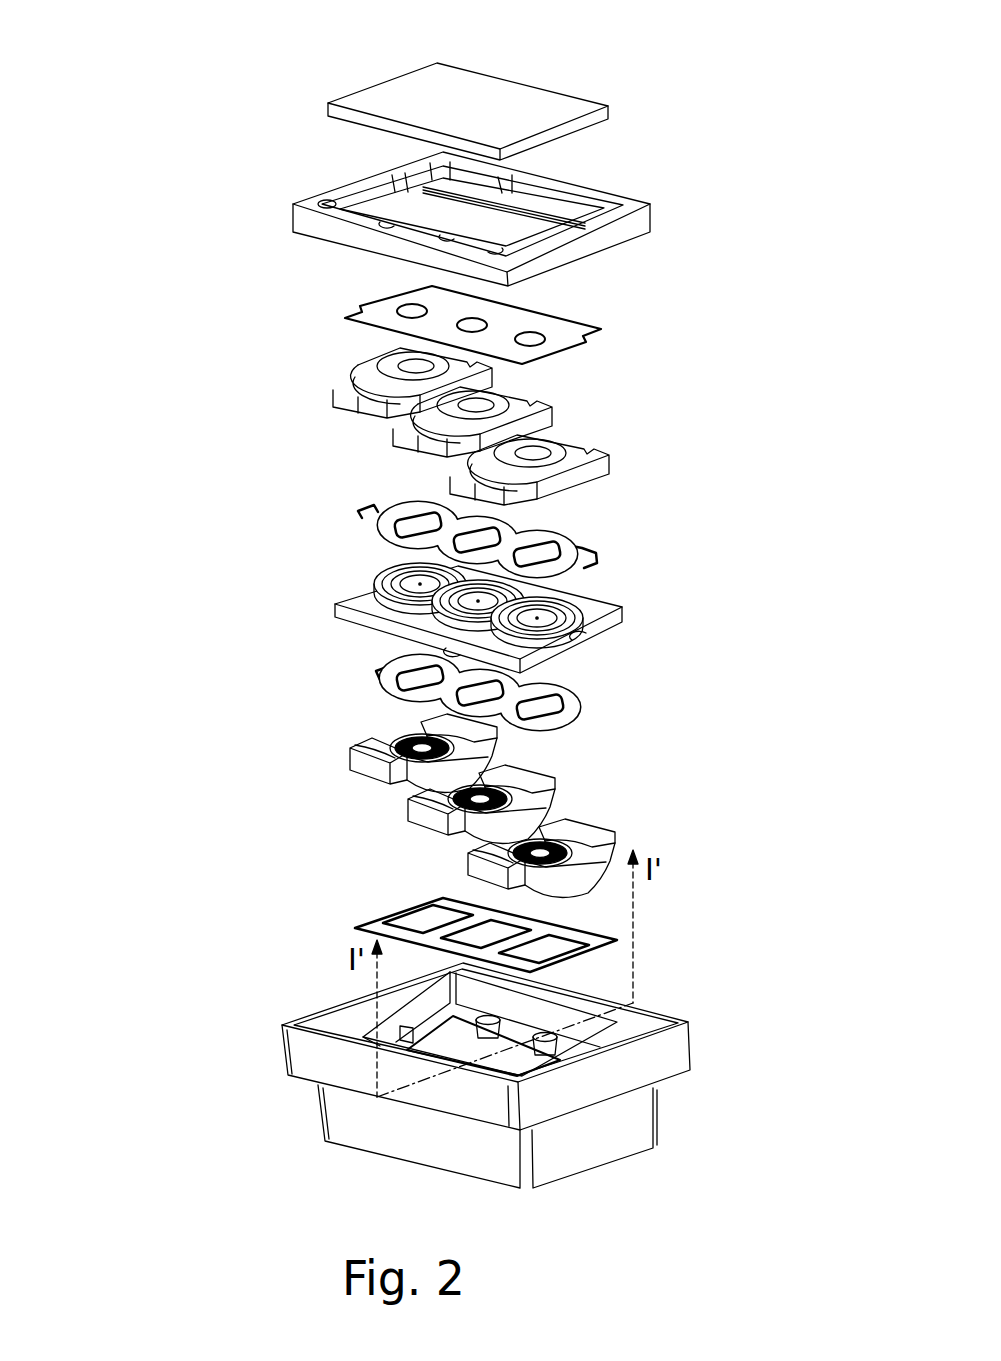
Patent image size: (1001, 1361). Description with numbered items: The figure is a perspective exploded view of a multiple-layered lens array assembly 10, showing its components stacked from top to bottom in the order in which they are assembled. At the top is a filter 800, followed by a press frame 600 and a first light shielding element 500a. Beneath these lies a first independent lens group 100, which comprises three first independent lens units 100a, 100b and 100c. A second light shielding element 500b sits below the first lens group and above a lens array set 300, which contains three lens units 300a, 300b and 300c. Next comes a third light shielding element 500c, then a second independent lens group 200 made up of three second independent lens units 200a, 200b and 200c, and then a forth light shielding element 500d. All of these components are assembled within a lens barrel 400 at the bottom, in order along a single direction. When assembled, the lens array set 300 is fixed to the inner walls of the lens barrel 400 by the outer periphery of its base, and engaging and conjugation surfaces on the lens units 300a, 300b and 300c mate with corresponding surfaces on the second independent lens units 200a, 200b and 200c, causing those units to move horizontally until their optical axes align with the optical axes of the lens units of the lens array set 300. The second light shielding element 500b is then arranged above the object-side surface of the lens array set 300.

The multiple-layered lens array assembly 10 is at (62, 32).
The filter 800 is at (375, 95).
The press frame 600 is at (633, 230).
The first light shielding element 500a is at (371, 321).
The first independent lens group 100 is at (558, 426).
The first independent lens unit 100a is at (610, 466).
The first independent lens unit 100b is at (550, 420).
The first independent lens unit 100c is at (490, 378).
The second light shielding element 500b is at (360, 522).
The lens array set 300 is at (467, 621).
The lens unit 300a is at (482, 630).
The lens unit 300b is at (422, 613).
The lens unit 300c is at (366, 599).
The third light shielding element 500c is at (378, 688).
The second independent lens group 200 is at (566, 806).
The second independent lens unit 200a is at (610, 845).
The second independent lens unit 200b is at (548, 796).
The second independent lens unit 200c is at (490, 740).
The forth light shielding element 500d is at (373, 932).
The lens barrel 400 is at (360, 1130).